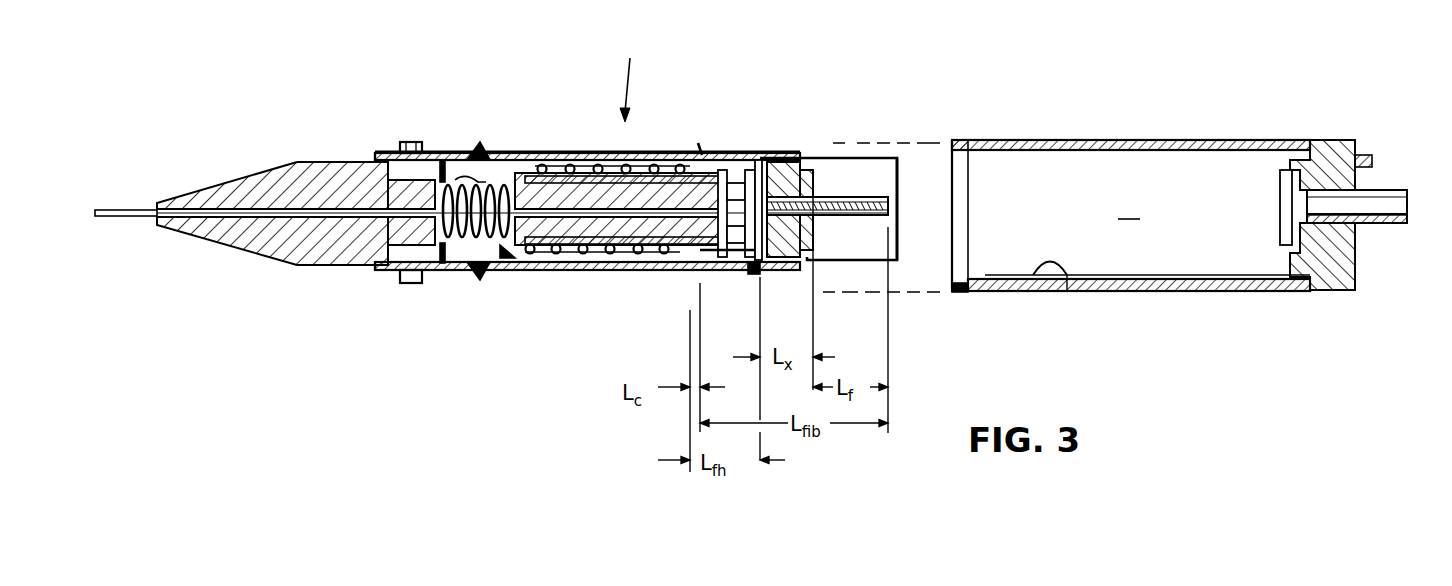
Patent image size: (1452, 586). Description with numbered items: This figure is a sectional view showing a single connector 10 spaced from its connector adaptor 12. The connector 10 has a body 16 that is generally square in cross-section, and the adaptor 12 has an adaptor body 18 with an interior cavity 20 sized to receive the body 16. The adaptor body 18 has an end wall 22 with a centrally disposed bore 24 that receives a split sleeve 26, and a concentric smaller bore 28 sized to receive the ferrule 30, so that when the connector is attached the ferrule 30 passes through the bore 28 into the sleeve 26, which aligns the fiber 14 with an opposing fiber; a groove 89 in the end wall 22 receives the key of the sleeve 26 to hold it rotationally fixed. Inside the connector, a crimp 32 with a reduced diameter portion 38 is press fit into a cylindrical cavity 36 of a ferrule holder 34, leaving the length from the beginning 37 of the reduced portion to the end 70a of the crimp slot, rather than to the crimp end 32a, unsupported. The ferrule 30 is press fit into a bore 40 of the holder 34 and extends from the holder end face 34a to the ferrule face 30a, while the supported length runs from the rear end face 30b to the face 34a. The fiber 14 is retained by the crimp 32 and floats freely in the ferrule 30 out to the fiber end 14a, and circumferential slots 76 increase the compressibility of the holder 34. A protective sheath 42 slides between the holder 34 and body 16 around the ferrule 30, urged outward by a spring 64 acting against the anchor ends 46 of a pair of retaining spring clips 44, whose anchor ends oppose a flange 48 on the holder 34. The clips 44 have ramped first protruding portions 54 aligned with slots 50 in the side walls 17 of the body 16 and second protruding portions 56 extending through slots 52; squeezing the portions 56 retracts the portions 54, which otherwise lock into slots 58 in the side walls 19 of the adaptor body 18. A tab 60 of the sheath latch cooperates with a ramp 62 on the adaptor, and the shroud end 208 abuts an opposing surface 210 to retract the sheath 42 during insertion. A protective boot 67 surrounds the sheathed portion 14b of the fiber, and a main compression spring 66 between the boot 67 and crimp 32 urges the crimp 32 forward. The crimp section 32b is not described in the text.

The connector 10 is at (624, 76).
The connector adaptor 12 is at (1054, 132).
The fiber 14 is at (770, 155).
The fiber end 14a is at (893, 212).
The sheathed portion of fiber 14b is at (119, 208).
The body 16 is at (699, 145).
The side walls of body 17 is at (620, 153).
The adaptor body 18 is at (1145, 140).
The side walls of adaptor body 19 is at (1075, 152).
The interior cavity 20 is at (1127, 206).
The end wall 22 is at (1335, 272).
The bore 24 is at (1356, 190).
The split sleeve 26 is at (1395, 225).
The bore 28 is at (1285, 205).
The ferrule 30 is at (898, 173).
The ferrule face 30a is at (892, 197).
The ferrule rear end face 30b is at (766, 272).
The crimp 32 is at (573, 263).
The end of crimp 32a is at (688, 248).
The ferrule body 32b is at (390, 258).
The ferrule holder 34 is at (818, 252).
The end face of holder 34a is at (816, 240).
The cylindrical cavity 36 is at (700, 262).
The beginning of reduced diameter portion 37 is at (650, 262).
The reduced diameter portion 38 is at (673, 152).
The bore 40 is at (845, 157).
The protective sheath 42 is at (865, 158).
The retaining spring clips 44 is at (447, 158).
The anchor ends 46 is at (542, 163).
The flange 48 is at (519, 262).
The slots 50 is at (490, 162).
The slots 52 is at (390, 150).
The first protruding portions 54 is at (470, 150).
The second protruding portions 56 is at (408, 140).
The slots 58 is at (960, 140).
The tab 60 is at (752, 270).
The ramp 62 is at (1063, 272).
The spring 64 is at (590, 176).
The main compression spring 66 is at (500, 258).
The protective boot 67 is at (226, 235).
The end of crimp slot 70a is at (730, 182).
The circumferential slots 76 is at (700, 270).
The groove 89 is at (1360, 225).
The shroud end 208 is at (900, 158).
The opposing surface 210 is at (1300, 257).